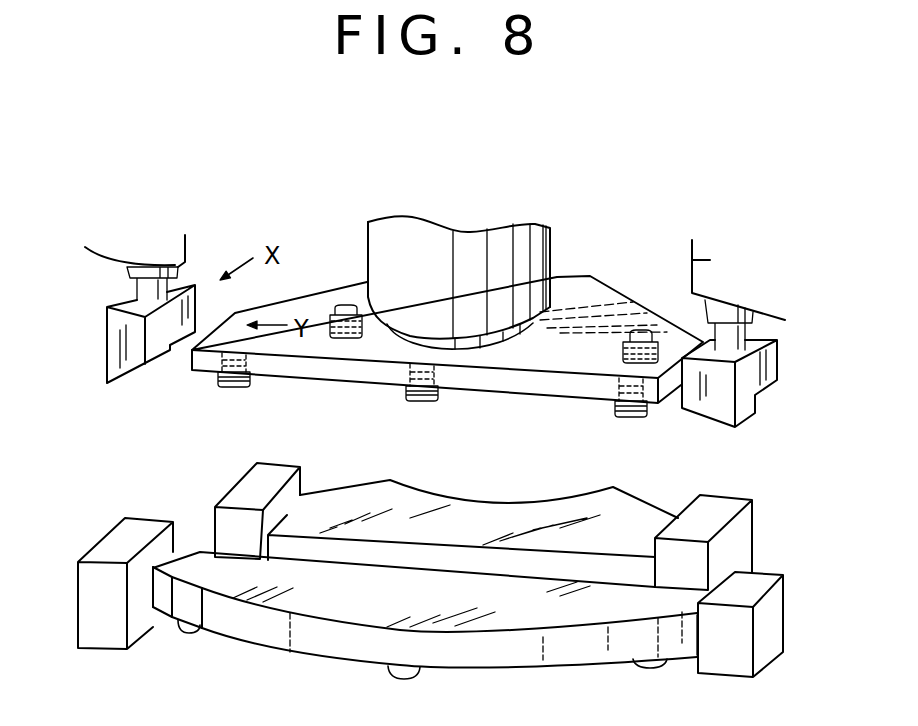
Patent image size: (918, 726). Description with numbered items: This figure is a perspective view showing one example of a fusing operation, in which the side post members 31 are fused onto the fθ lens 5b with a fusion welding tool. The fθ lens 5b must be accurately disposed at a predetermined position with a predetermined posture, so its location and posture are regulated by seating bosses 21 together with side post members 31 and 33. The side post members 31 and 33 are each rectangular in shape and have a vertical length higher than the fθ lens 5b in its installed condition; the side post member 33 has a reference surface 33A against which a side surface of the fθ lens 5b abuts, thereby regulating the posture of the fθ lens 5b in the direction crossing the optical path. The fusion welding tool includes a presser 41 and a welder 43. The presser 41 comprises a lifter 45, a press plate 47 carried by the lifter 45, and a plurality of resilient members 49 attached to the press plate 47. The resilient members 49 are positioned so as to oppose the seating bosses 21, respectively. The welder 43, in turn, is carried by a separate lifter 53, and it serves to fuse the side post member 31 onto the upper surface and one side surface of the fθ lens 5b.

The presser 41 is at (568, 231).
The lifter 45 is at (378, 248).
The press plate 47 is at (528, 360).
The resilient members 49 is at (237, 386).
The welder 43 is at (104, 328).
The lifter 53 is at (170, 240).
The side post member 31 is at (235, 483).
The side post member 33 is at (97, 540).
The reference surface 33A is at (138, 598).
The seating bosses 21 is at (197, 630).
The fθ lens 5b is at (363, 617).